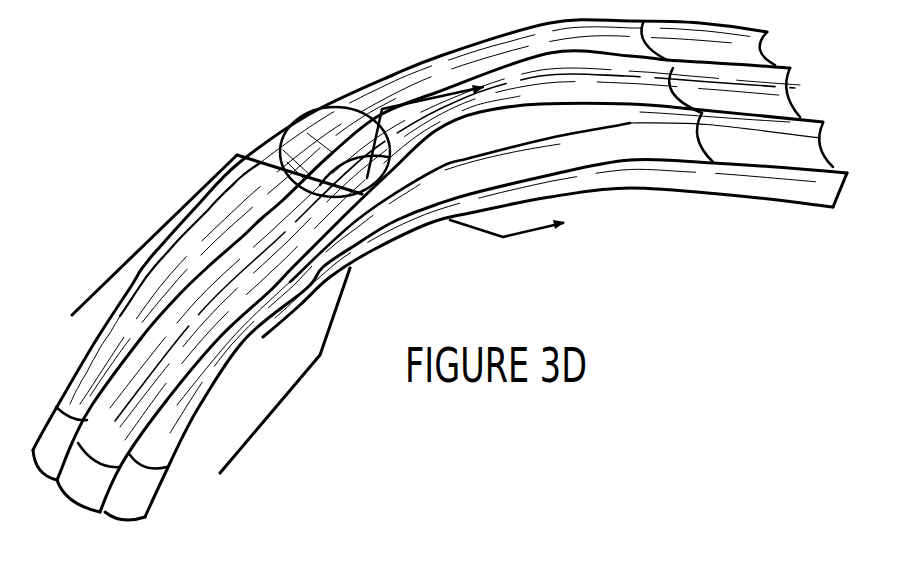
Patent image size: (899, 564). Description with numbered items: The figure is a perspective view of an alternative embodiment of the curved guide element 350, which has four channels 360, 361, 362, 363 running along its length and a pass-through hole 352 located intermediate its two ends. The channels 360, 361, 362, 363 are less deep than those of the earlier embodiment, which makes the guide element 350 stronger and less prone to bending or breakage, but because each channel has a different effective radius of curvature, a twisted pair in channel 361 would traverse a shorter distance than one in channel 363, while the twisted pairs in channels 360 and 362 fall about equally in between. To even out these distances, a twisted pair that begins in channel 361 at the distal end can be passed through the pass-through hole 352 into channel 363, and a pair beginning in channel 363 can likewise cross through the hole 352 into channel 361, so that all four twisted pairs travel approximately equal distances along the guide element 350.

The guide element 350 is at (445, 270).
The pass-through hole 352 is at (322, 128).
The channel 360 is at (782, 160).
The channel 361 is at (748, 108).
The channel 362 is at (757, 53).
The channel 363 is at (832, 110).